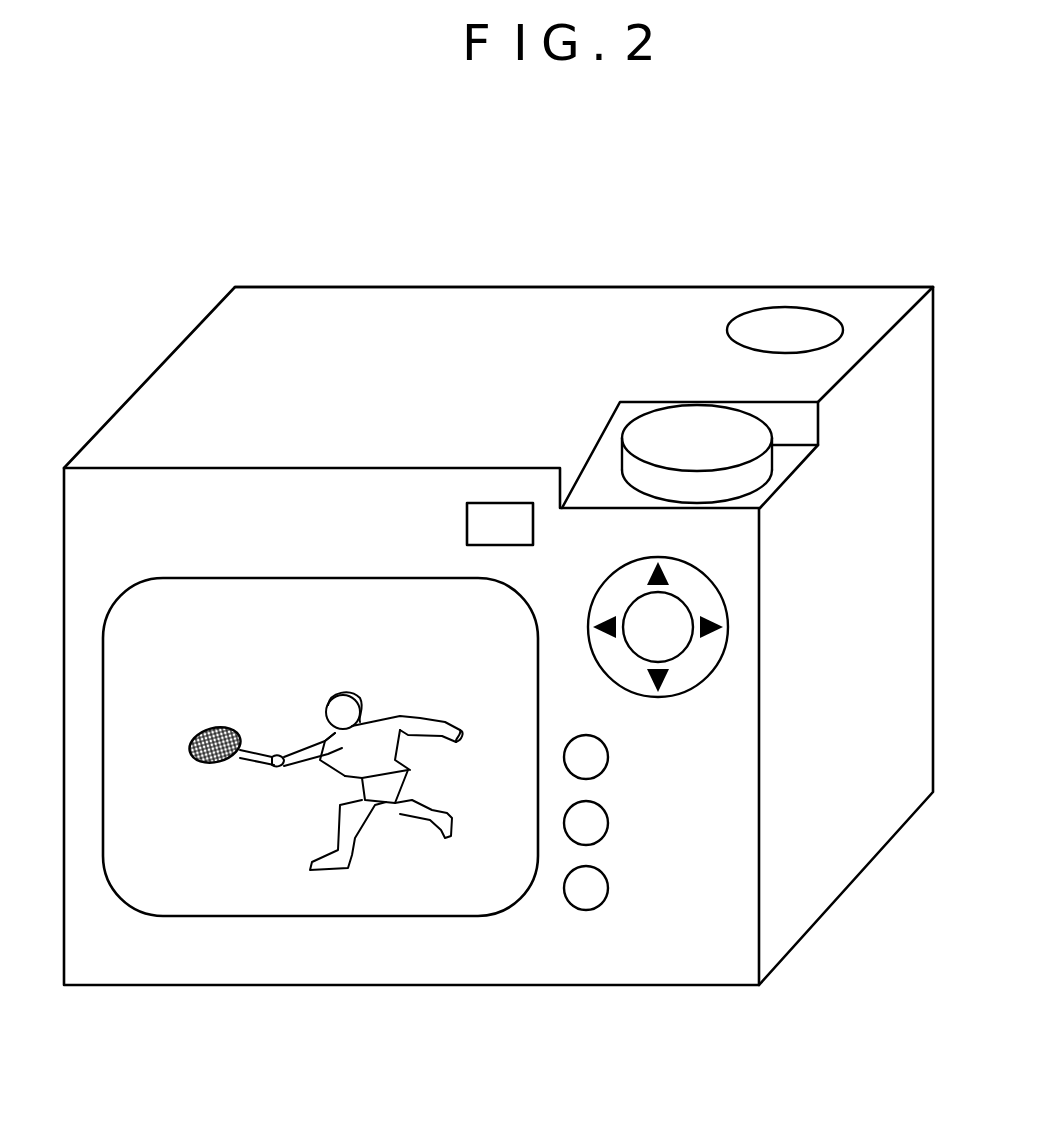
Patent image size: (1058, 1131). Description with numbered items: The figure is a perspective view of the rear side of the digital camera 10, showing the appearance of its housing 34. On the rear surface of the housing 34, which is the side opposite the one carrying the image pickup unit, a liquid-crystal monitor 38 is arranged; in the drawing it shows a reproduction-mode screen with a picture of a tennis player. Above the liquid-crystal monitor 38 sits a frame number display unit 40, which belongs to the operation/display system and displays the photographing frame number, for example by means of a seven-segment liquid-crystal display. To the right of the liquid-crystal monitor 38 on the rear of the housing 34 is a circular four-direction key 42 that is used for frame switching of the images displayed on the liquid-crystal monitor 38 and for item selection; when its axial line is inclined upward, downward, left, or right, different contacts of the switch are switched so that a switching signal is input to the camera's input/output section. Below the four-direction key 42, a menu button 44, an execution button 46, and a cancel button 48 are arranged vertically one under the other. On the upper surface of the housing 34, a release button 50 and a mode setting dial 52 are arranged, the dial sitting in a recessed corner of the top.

The digital camera 10 is at (667, 240).
The housing 34 is at (521, 302).
The liquid-crystal monitor 38 is at (255, 892).
The frame number display unit 40 is at (475, 502).
The four-direction key 42 is at (703, 598).
The menu button 44 is at (607, 742).
The execution button 46 is at (608, 808).
The cancel button 48 is at (607, 873).
The release button 50 is at (782, 330).
The mode setting dial 52 is at (713, 442).